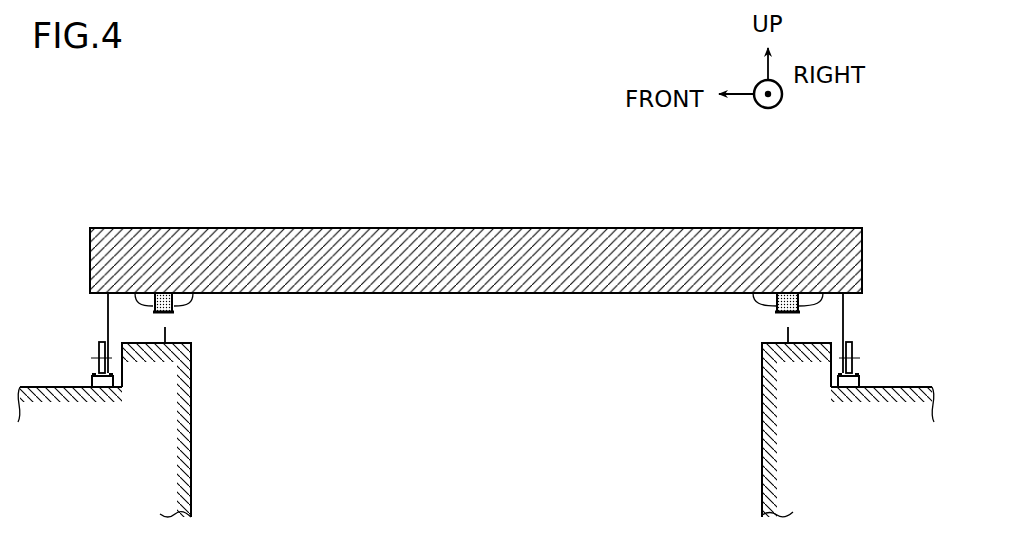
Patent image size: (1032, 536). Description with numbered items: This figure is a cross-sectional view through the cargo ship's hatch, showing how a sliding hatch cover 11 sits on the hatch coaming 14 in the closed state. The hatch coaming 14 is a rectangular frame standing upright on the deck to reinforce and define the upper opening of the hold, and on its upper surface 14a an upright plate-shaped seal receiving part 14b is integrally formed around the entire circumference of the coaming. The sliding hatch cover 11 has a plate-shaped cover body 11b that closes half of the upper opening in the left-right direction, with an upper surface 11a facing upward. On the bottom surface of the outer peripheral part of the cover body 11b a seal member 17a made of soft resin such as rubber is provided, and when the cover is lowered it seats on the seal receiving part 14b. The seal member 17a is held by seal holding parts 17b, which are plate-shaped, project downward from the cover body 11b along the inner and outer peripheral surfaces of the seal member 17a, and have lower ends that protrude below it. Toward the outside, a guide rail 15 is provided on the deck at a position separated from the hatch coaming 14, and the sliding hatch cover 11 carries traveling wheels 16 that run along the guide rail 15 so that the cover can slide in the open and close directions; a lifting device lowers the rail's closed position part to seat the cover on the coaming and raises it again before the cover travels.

The sliding hatch cover 11 is at (486, 223).
The upper surface 11a is at (555, 228).
The cover body 11b is at (640, 244).
The hatch coaming 14 is at (203, 347).
The upper surface 14a is at (143, 343).
The seal receiving part 14b is at (167, 333).
The guide rail 15 is at (92, 383).
The traveling wheel 16 is at (98, 354).
The seal member 17a is at (167, 293).
The seal holding part 17b is at (136, 297).